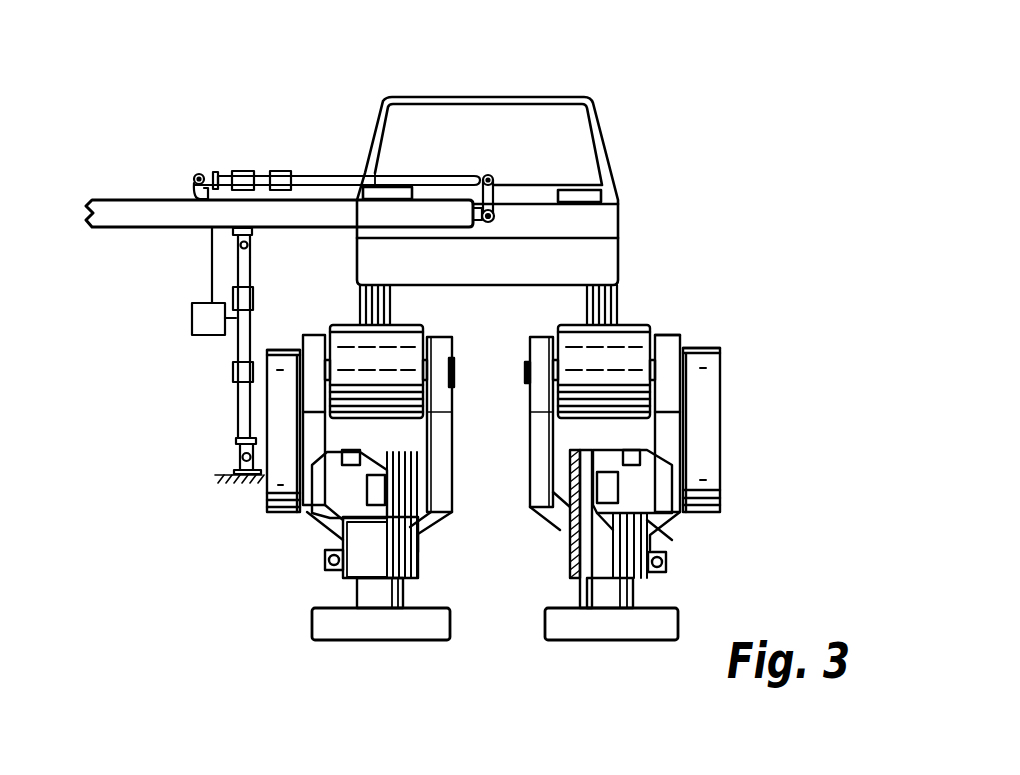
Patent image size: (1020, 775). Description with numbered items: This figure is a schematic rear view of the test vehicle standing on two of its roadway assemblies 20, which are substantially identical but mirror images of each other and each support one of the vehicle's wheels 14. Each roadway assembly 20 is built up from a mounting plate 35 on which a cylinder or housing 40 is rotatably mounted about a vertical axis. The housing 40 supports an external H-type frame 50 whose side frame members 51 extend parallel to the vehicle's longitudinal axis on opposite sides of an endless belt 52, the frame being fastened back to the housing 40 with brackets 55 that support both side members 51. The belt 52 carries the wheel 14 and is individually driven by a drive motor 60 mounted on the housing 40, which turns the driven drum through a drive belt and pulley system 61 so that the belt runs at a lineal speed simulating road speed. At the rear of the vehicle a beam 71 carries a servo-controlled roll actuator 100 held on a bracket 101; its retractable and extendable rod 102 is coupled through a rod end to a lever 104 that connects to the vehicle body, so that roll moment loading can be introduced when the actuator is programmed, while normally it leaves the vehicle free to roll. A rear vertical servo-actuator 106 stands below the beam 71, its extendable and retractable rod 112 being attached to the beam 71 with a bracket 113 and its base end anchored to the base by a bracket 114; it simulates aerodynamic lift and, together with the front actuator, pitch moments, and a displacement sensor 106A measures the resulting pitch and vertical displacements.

The wheels 14 is at (360, 301).
The roadway assembly 20 is at (250, 493).
The mounting plate 35 is at (390, 640).
The cylinder or housing 40 is at (418, 557).
The H-type frame 50 is at (680, 322).
The side frame member 51 is at (442, 342).
The endless belt 52 is at (340, 327).
The brackets 55 is at (543, 463).
The drive motor 60 is at (343, 478).
The drive belt and pulley system 61 is at (275, 513).
The beam 71 is at (420, 216).
The servo-controlled roll actuator 100 is at (281, 170).
The bracket 101 is at (197, 190).
The retractable and extendable rod 102 is at (331, 175).
The lever 104 is at (494, 190).
The rear vertical servo-actuator 106 is at (237, 395).
The displacement sensor 106A is at (192, 314).
The extendable and retractable rod 112 is at (236, 274).
The bracket 113 is at (254, 233).
The bracket 114 is at (236, 471).